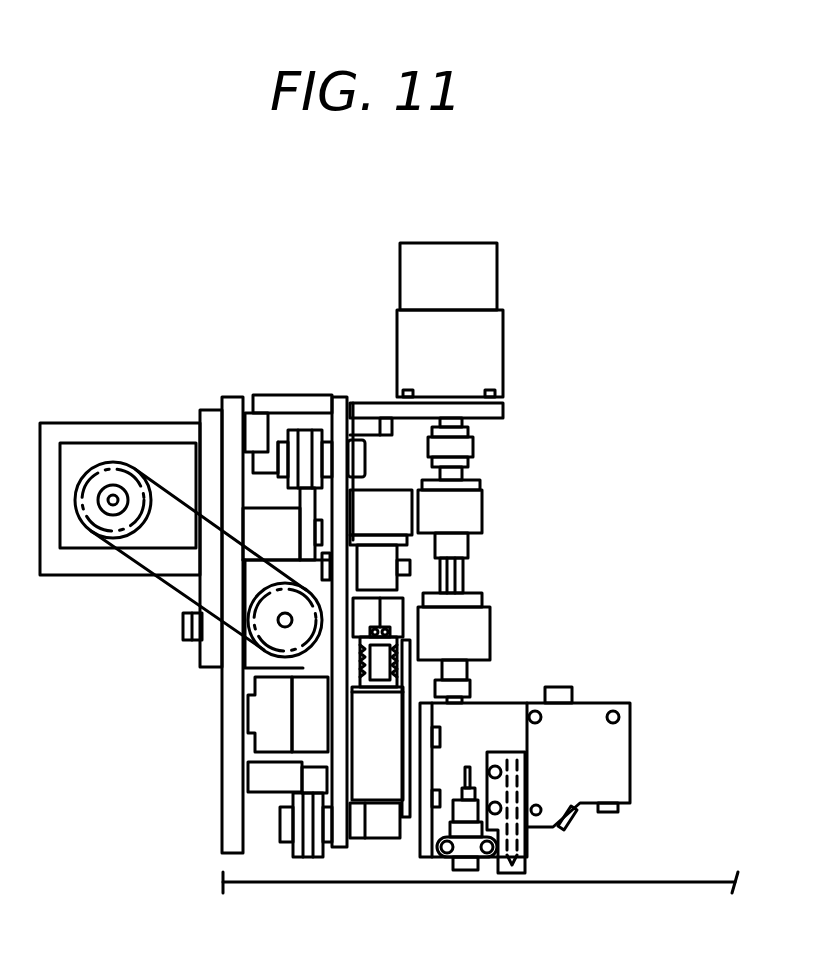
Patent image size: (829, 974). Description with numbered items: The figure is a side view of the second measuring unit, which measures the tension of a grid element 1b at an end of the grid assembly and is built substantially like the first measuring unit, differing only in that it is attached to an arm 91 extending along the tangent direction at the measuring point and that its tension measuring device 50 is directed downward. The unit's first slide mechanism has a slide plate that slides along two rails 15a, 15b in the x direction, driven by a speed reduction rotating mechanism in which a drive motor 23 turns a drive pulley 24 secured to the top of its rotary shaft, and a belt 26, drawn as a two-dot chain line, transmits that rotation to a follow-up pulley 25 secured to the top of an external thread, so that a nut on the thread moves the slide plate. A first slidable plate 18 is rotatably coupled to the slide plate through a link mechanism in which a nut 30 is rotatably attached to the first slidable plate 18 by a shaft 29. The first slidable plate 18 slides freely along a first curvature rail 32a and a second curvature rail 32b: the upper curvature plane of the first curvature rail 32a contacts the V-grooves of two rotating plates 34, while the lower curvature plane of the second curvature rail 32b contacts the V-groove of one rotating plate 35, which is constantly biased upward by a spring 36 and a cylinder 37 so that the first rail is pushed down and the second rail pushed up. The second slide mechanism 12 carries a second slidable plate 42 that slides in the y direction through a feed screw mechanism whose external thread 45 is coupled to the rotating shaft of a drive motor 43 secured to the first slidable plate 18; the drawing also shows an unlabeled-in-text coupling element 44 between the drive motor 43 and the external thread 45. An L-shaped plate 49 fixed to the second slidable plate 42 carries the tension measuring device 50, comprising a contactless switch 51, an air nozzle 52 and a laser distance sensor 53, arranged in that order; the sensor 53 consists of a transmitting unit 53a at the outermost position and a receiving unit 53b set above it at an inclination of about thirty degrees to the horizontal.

The grid element 1b is at (712, 893).
The second slide mechanism 12 is at (508, 541).
The rail 15a is at (260, 427).
The rail 15b is at (257, 720).
The first slidable plate 18 is at (339, 398).
The drive motor 23 is at (152, 457).
The drive pulley 24 is at (277, 637).
The follow-up pulley 25 is at (93, 517).
The belt 26 is at (128, 538).
The shaft 29 is at (427, 530).
The nut 30 is at (375, 567).
The first curvature rail 32a is at (307, 518).
The second curvature rail 32b is at (290, 783).
The rotating plate 34 is at (290, 430).
The rotating plate 35 is at (300, 858).
The spring 36 is at (395, 657).
The cylinder 37 is at (383, 783).
The second slidable plate 42 is at (407, 807).
The drive motor 43 is at (488, 340).
The coupling 44 is at (462, 447).
The external thread 45 is at (465, 577).
The L-shaped plate 49 is at (500, 727).
The tension measuring device 50 is at (615, 682).
The contactless switch 51 is at (470, 863).
The air nozzle 52 is at (522, 875).
The sensor 53 is at (625, 733).
The transmitting unit 53a is at (618, 810).
The receiving unit 53b is at (573, 827).
The arm 91 is at (230, 833).